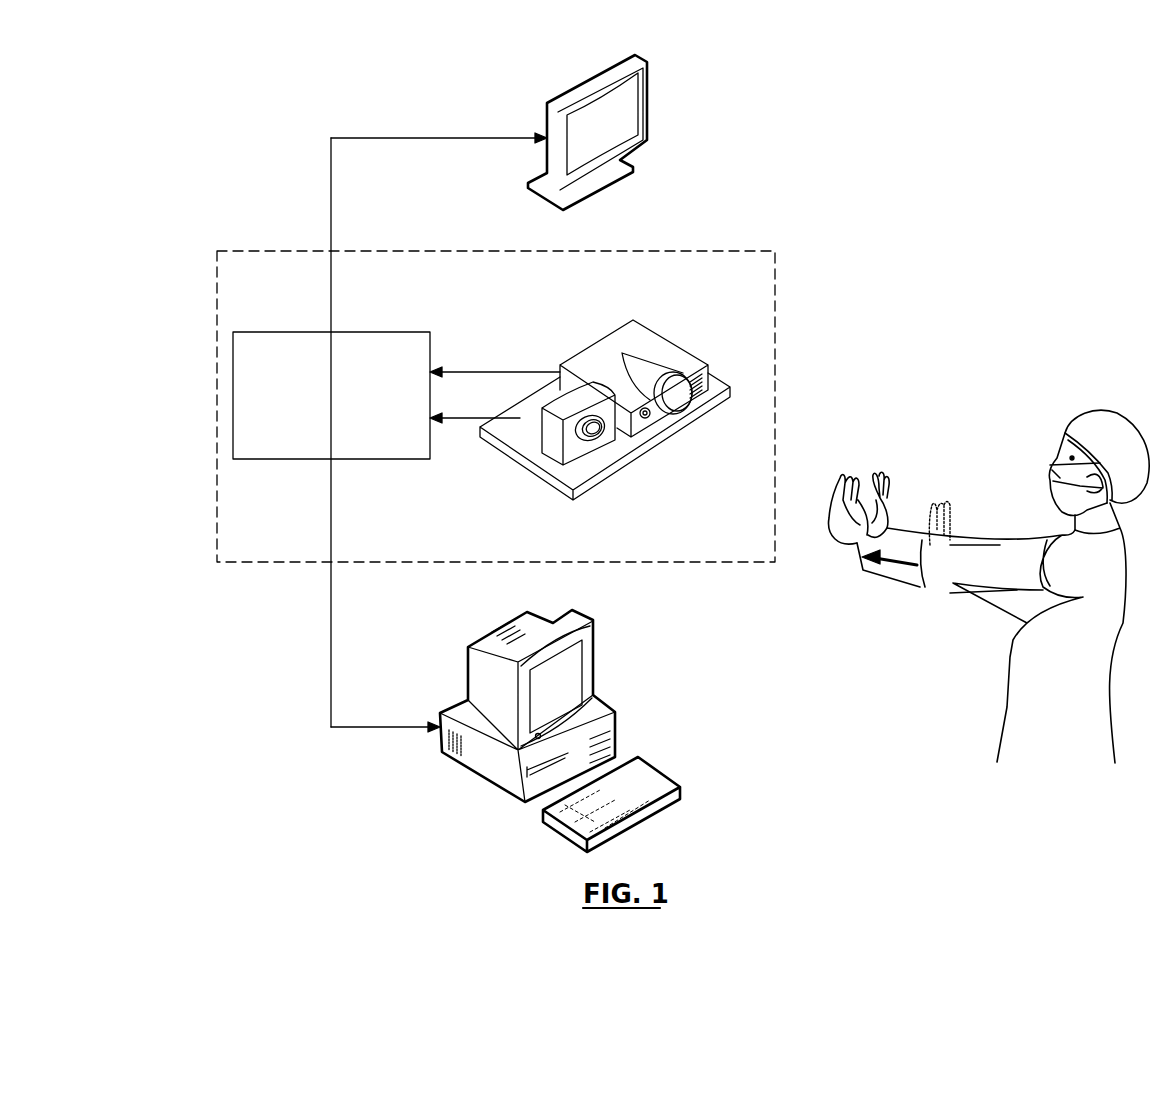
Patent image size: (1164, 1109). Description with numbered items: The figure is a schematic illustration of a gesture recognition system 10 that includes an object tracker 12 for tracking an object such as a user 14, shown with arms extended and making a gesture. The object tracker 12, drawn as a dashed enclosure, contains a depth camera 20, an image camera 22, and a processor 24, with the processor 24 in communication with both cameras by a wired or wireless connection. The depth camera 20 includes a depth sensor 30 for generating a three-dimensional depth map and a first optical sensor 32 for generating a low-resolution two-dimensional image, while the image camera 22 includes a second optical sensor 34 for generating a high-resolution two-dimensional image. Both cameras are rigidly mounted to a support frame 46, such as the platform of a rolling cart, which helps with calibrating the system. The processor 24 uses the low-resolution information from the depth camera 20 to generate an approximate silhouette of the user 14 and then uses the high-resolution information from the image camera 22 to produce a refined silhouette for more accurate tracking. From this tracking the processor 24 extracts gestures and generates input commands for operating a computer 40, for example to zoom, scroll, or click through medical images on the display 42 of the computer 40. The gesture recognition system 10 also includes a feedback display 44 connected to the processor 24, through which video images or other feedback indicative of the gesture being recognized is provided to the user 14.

The gesture recognition system 10 is at (248, 98).
The object tracker 12 is at (217, 251).
The user 14 is at (997, 735).
The depth camera 20 is at (637, 350).
The image camera 22 is at (580, 400).
The processor 24 is at (290, 332).
The depth sensor 30 is at (652, 418).
The first optical sensor 32 is at (676, 398).
The second optical sensor 34 is at (598, 436).
The computer 40 is at (465, 665).
The display 42 is at (563, 682).
The feedback display 44 is at (540, 100).
The support frame 46 is at (718, 380).